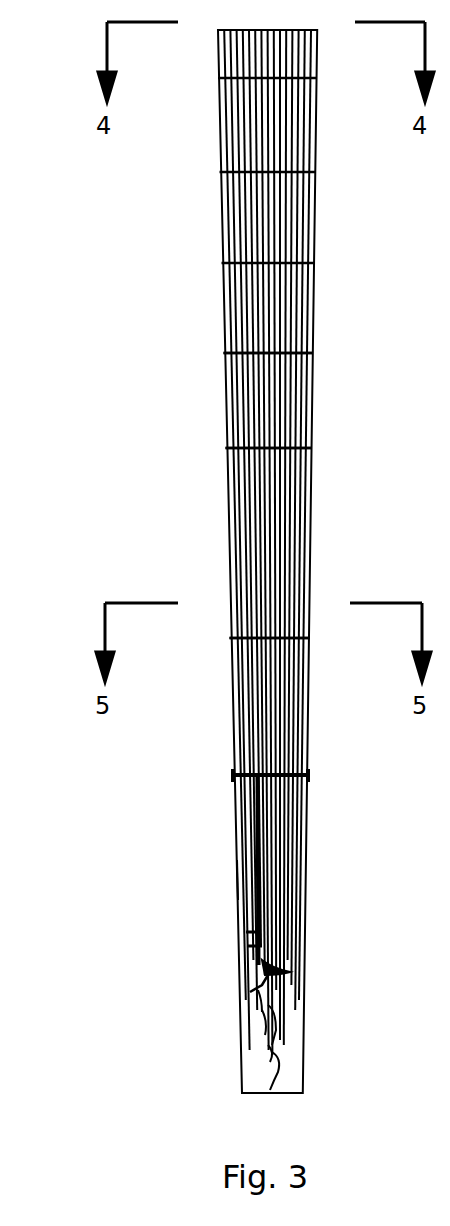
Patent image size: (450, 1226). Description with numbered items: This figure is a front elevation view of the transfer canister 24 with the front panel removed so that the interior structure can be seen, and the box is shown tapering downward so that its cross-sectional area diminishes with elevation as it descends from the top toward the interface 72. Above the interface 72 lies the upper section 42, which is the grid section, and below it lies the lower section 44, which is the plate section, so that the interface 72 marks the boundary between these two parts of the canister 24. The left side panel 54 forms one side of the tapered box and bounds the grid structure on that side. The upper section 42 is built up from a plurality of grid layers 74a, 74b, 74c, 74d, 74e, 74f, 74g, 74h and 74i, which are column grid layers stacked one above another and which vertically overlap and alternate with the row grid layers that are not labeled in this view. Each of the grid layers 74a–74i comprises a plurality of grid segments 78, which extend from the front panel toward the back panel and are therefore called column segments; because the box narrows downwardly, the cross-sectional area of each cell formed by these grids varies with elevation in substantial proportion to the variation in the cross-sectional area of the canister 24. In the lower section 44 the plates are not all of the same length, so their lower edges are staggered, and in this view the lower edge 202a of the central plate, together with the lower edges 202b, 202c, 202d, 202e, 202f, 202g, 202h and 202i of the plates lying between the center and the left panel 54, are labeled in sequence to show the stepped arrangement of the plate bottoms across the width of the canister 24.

The transfer canister 24 is at (190, 226).
The upper section 42 is at (214, 347).
The lower section 44 is at (222, 882).
The left side panel 54 is at (234, 846).
The interface 72 is at (232, 777).
The grid layer 74a is at (218, 68).
The grid layer 74b is at (220, 140).
The grid layer 74c is at (222, 205).
The grid layer 74d is at (223, 305).
The grid layer 74e is at (225, 385).
The grid layer 74f is at (228, 500).
The grid layer 74g is at (229, 555).
The grid layer 74h is at (232, 700).
The grid layer 74i is at (232, 740).
The grid segment 78 is at (226, 420).
The lower edge 202a is at (272, 1040).
The lower edge 202b is at (270, 1068).
The lower edge 202c is at (285, 972).
The lower edge 202d is at (268, 1055).
The lower edge 202e is at (262, 1010).
The lower edge 202f is at (262, 1022).
The lower edge 202g is at (250, 950).
The lower edge 202h is at (253, 996).
The lower edge 202i is at (246, 936).